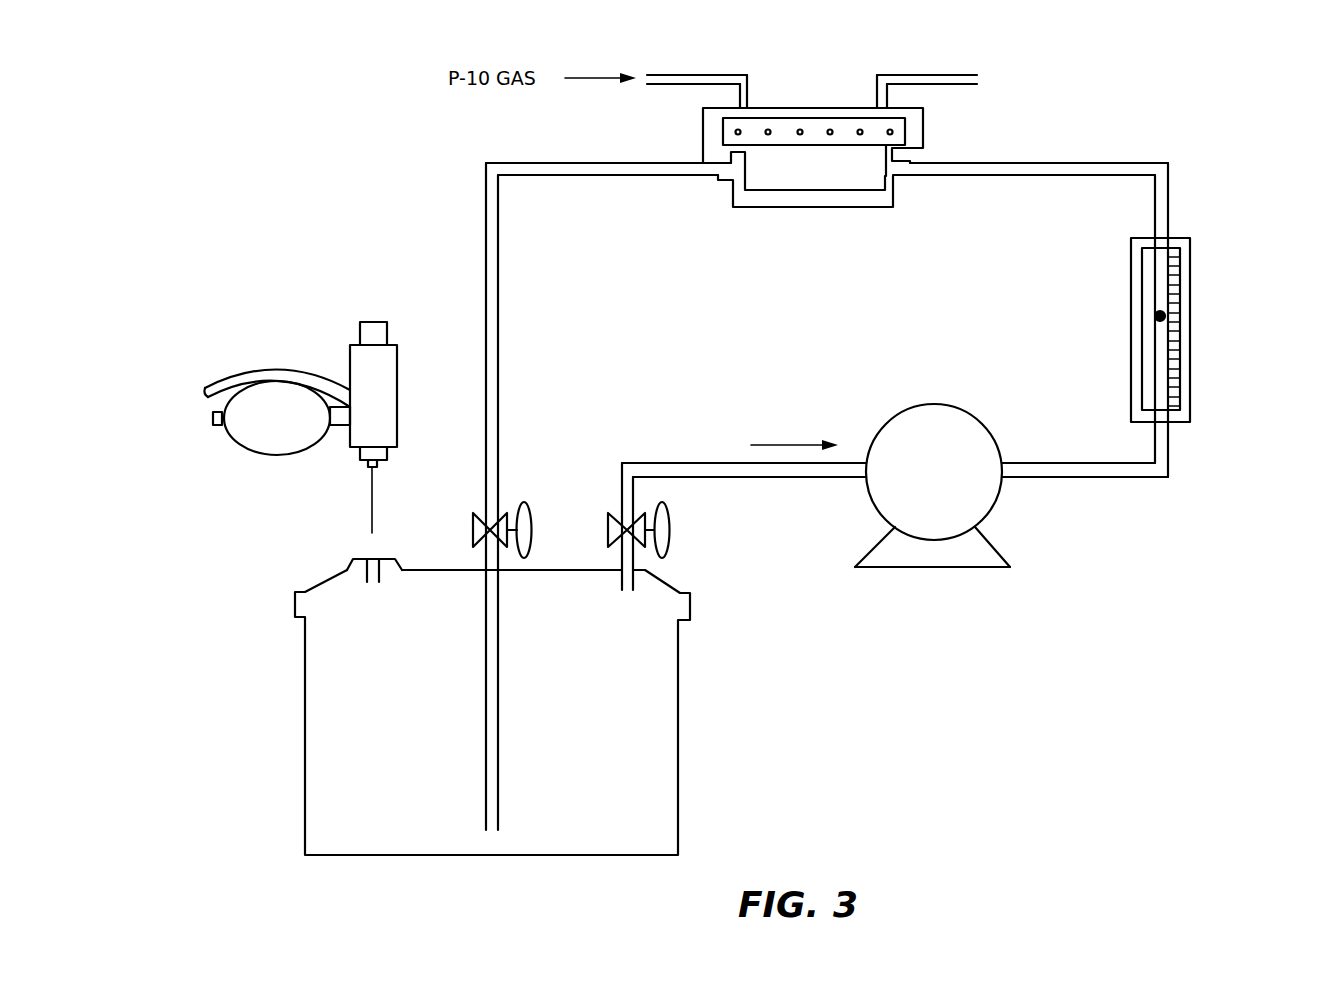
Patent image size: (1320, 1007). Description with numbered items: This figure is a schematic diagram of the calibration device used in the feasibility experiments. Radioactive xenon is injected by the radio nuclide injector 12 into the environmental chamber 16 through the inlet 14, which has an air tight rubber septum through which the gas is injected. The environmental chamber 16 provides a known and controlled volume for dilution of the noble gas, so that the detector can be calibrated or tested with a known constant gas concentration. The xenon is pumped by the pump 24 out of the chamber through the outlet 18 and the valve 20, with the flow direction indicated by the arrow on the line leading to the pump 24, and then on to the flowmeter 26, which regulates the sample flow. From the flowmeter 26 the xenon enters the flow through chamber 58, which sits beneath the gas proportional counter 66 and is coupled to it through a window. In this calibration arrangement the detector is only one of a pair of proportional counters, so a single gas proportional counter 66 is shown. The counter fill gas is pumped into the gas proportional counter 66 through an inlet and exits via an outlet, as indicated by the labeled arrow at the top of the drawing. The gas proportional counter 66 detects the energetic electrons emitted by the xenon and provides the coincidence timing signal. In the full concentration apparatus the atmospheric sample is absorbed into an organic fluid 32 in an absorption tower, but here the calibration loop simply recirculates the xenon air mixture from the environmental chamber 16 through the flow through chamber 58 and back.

The radio nuclide injector 12 is at (300, 370).
The inlet 14 is at (367, 559).
The environmental chamber 16 is at (305, 675).
The outlet 18 is at (628, 595).
The valve 20 is at (607, 513).
The pump 24 is at (888, 568).
The flowmeter 26 is at (1190, 296).
The organic fluid 32 is at (805, 478).
The flow through chamber 58 is at (792, 183).
The gas proportional counter 66 is at (924, 133).